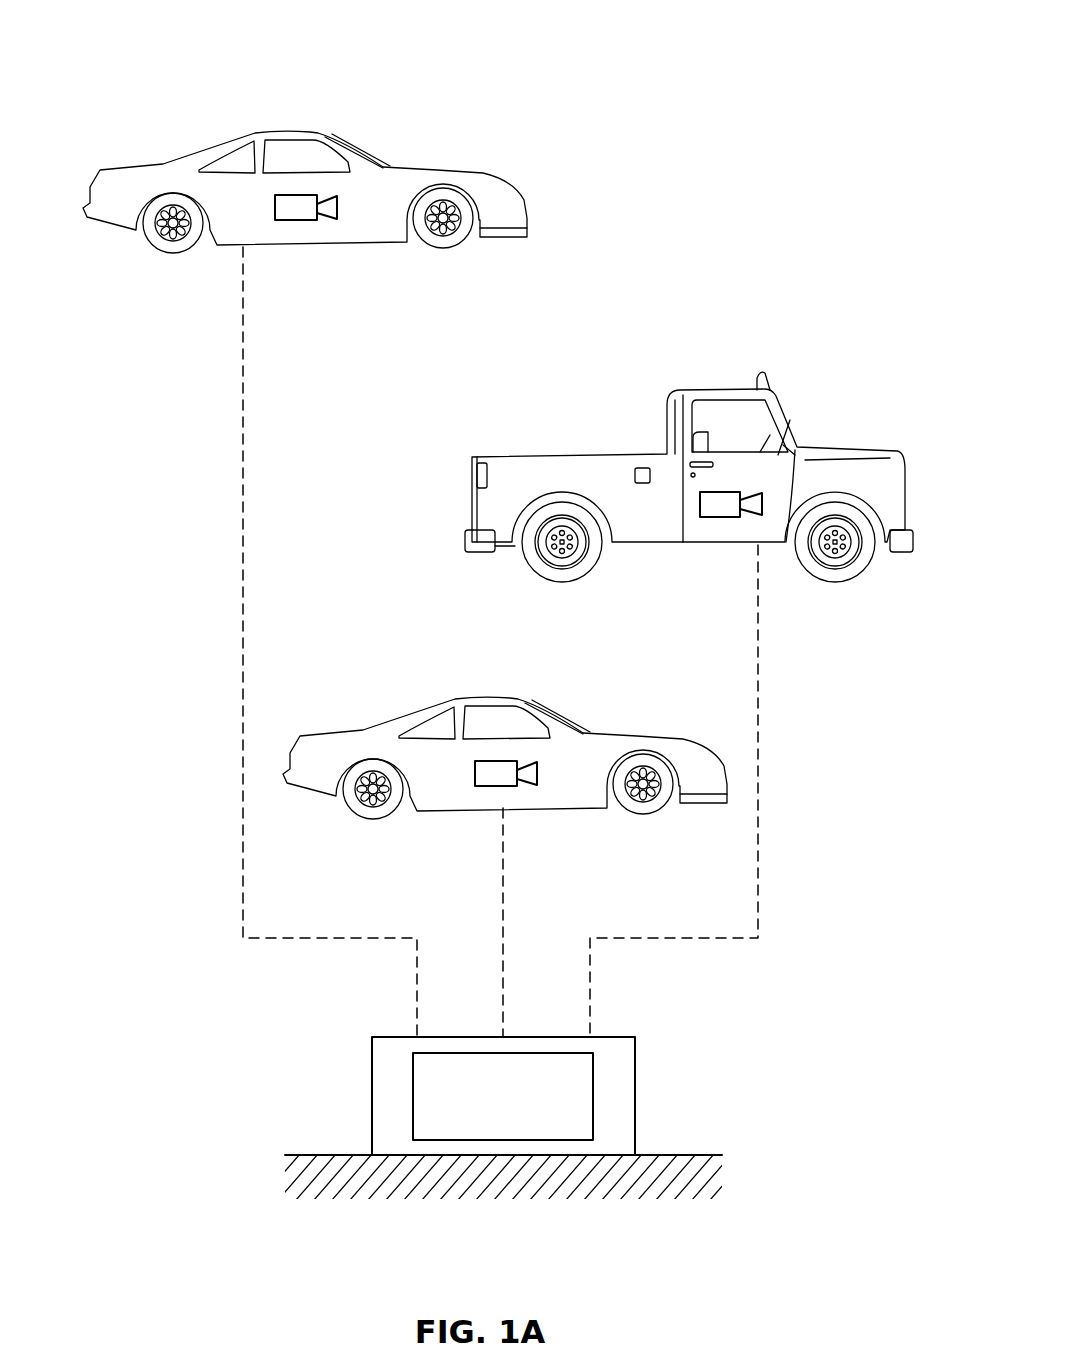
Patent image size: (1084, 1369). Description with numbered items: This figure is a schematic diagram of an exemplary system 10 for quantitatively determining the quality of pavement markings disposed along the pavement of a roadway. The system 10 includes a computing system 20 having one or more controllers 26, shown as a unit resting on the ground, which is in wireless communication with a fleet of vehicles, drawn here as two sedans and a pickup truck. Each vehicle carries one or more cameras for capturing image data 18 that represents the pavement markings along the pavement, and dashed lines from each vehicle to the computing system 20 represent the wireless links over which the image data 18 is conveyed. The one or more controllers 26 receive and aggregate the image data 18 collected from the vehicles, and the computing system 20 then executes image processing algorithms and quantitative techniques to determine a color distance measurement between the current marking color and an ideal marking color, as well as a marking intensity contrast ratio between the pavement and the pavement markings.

The system 10 is at (677, 29).
The image data 18 is at (247, 413).
The computing system 20 is at (505, 1118).
The controllers 26 is at (488, 1112).